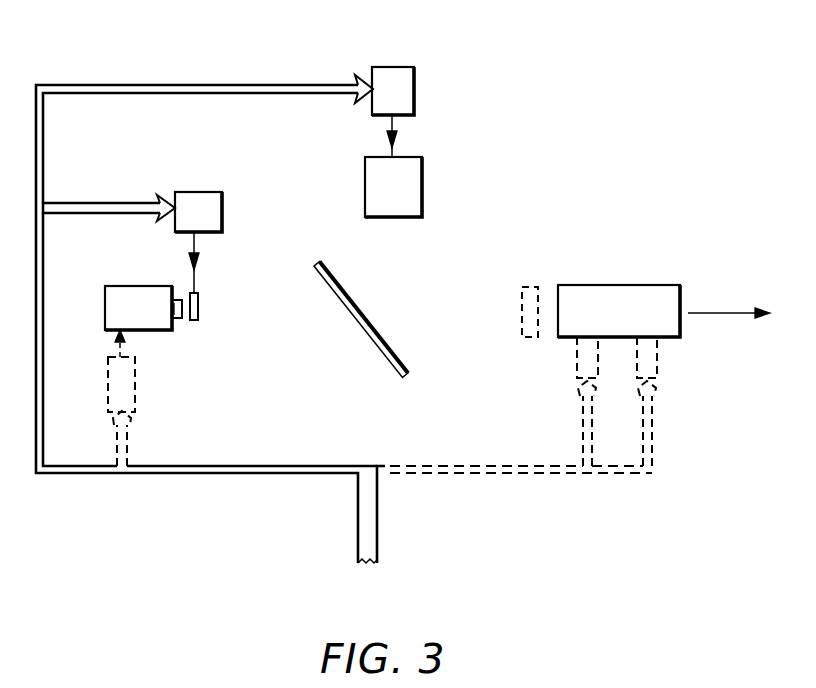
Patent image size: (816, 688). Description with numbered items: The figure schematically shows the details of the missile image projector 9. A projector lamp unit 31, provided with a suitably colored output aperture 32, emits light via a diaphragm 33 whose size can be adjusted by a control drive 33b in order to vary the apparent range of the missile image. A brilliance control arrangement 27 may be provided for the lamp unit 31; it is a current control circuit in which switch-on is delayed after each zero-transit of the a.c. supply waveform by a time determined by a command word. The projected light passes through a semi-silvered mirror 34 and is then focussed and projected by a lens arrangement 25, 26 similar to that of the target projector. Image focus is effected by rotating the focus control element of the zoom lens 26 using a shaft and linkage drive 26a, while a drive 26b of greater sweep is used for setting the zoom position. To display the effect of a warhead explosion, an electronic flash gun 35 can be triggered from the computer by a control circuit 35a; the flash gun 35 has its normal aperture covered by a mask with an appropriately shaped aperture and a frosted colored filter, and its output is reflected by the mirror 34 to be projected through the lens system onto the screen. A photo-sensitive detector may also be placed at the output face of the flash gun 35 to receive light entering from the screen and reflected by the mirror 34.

The missile image projector 9 is at (260, 142).
The lens arrangement 25 is at (521, 311).
The zoom lens 26 is at (632, 298).
The shaft and linkage drive 26a is at (577, 363).
The drive 26b is at (657, 365).
The brilliance control arrangement 27 is at (133, 392).
The projector lamp unit 31 is at (138, 297).
The output aperture 32 is at (176, 318).
The diaphragm 33 is at (200, 306).
The control drive 33b is at (212, 212).
The semi-silvered mirror 34 is at (383, 346).
The electronic flash gun 35 is at (412, 186).
The control circuit 35a is at (392, 70).